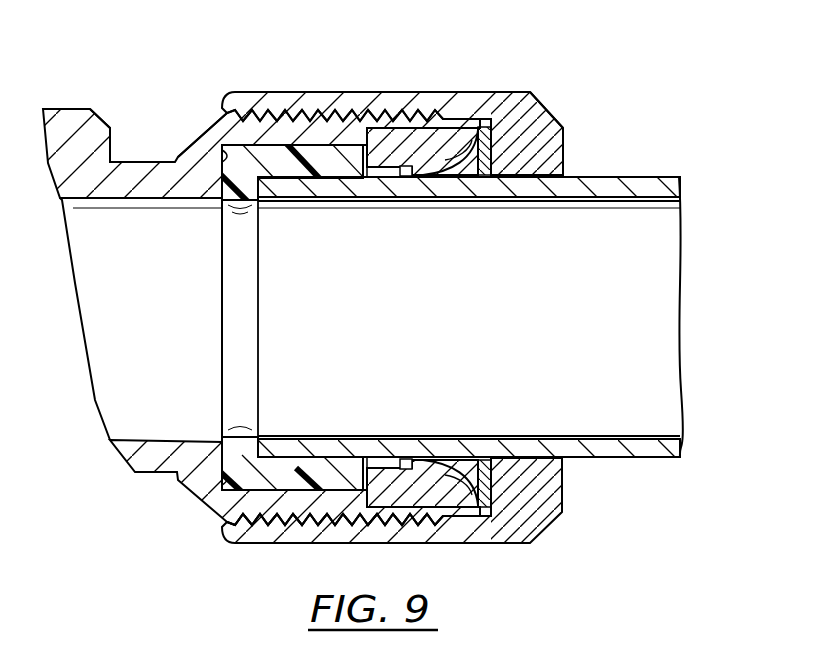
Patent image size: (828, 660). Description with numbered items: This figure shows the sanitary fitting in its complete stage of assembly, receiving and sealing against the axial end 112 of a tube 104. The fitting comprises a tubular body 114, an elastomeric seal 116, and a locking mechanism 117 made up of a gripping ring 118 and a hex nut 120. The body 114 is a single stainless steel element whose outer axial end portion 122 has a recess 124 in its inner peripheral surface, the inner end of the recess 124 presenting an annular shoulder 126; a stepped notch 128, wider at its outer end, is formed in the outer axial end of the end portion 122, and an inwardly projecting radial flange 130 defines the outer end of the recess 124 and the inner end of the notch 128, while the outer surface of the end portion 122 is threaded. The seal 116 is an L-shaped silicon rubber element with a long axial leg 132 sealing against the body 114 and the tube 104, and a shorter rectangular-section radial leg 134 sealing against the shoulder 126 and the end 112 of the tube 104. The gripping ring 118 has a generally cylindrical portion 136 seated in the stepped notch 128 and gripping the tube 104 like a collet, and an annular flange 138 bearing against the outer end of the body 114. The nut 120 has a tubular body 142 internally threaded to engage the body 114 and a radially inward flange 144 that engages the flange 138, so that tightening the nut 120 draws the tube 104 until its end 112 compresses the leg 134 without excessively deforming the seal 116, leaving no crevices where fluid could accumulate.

The tube 104 is at (658, 176).
The axial end of the tube 112 is at (190, 483).
The tubular body 114 is at (130, 152).
The elastomeric seal 116 is at (276, 503).
The locking mechanism 117 is at (568, 103).
The gripping ring 118 is at (484, 120).
The hex nut 120 is at (543, 82).
The outer axial end portion 122 is at (243, 126).
The recess 124 is at (262, 146).
The annular shoulder 126 is at (230, 160).
The stepped notch 128 is at (413, 466).
The radial flange 130 is at (383, 458).
The axial leg 132 is at (327, 480).
The radial leg 134 is at (240, 440).
The generally cylindrical portion 136 is at (412, 177).
The annular flange 138 is at (487, 510).
The tubular body of the nut 142 is at (433, 50).
The flange of the nut 144 is at (563, 146).